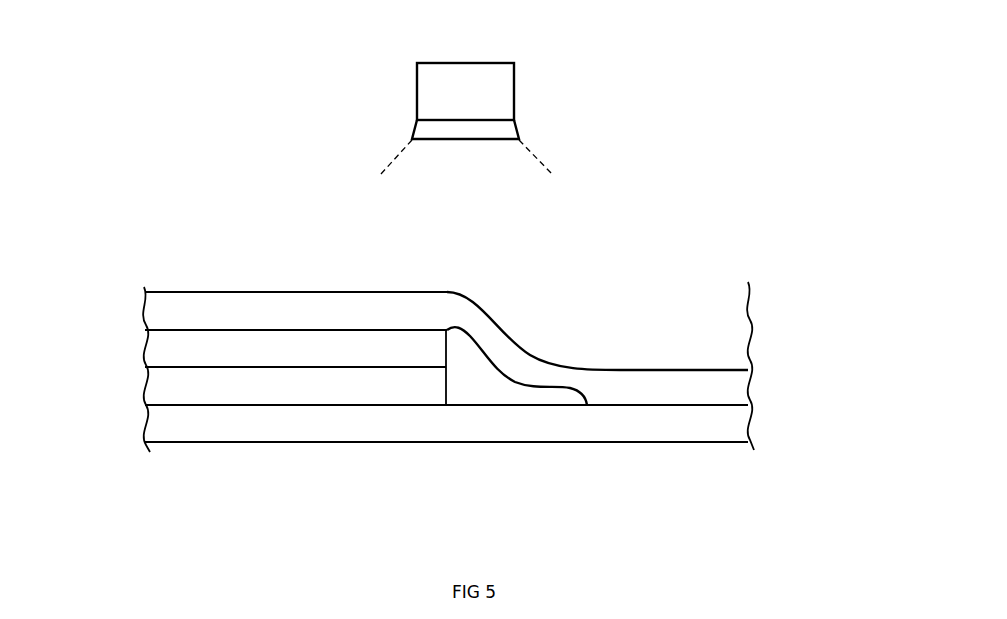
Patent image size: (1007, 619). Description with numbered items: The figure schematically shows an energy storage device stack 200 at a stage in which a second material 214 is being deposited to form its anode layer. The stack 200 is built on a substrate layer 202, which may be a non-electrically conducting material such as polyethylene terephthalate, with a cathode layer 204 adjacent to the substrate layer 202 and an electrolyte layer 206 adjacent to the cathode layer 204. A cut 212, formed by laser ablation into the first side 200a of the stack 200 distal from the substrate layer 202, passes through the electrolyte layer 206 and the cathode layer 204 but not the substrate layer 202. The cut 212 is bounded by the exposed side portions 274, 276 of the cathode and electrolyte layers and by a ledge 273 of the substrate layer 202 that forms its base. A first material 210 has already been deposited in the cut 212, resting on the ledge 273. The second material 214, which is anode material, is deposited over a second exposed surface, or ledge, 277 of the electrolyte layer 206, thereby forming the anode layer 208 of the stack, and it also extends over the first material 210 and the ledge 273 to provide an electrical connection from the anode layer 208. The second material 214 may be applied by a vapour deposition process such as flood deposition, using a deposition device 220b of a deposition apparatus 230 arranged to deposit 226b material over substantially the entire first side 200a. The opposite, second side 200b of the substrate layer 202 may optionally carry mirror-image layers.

The stack 200 is at (442, 354).
The first side of the stack 200a is at (272, 292).
The second side of the stack 200b is at (272, 442).
The substrate layer 202 is at (160, 424).
The cathode layer 204 is at (160, 385).
The electrolyte layer 206 is at (160, 344).
The anode layer 208 is at (160, 307).
The first material 210 is at (487, 387).
The cut 212 is at (723, 300).
The second material 214 is at (600, 378).
The deposition device 220b is at (514, 85).
The deposition of second material 226b is at (540, 162).
The deposition apparatus 230 is at (509, 107).
The ledge of the substrate layer 273 is at (476, 405).
The exposed portion of the cathode layer 274 is at (446, 352).
The exposed portion of the electrolyte layer 276 is at (441, 350).
The second exposed surface of the electrolyte layer 277 is at (320, 327).